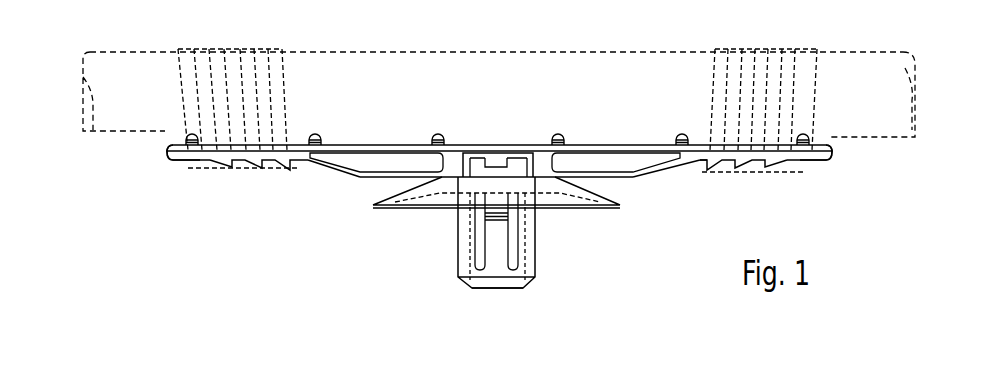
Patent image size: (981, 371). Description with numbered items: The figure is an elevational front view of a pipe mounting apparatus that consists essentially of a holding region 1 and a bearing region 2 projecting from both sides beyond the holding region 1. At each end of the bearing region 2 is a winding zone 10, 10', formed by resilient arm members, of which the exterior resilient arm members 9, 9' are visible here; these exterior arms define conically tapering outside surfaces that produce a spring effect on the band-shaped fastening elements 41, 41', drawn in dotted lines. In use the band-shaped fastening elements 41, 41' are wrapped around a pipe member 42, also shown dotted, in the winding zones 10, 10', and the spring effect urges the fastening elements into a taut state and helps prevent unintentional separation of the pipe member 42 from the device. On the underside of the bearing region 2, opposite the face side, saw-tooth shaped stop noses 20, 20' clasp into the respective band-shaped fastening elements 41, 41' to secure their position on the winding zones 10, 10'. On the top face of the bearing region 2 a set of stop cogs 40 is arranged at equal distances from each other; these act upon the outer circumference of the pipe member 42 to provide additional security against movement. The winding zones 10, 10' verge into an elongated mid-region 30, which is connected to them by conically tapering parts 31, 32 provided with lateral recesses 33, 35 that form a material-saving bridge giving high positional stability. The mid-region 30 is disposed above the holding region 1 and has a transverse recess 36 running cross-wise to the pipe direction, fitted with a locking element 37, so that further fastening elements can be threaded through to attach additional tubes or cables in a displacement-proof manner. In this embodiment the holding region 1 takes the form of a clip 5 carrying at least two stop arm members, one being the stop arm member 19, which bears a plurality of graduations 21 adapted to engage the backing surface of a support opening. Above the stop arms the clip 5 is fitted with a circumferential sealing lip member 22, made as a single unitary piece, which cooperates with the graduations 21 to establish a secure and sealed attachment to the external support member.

The holding region 1 is at (446, 279).
The bearing region 2 is at (589, 140).
The clip 5 is at (536, 272).
The resilient arm member 9 is at (183, 175).
The resilient arm member 9' is at (821, 179).
The winding zone 10 is at (135, 117).
The winding zone 10' is at (870, 126).
The stop arm member 19 is at (495, 268).
The stop nose 20 is at (244, 200).
The stop nose 20' is at (752, 192).
The graduations 21 is at (486, 218).
The circumferential sealing lip member 22 is at (600, 209).
The mid-region 30 is at (495, 152).
The conically tapering part 31 is at (331, 176).
The conically tapering part 32 is at (661, 177).
The lateral recess 33 is at (393, 152).
The lateral recess 35 is at (637, 156).
The transverse recess 36 is at (517, 157).
The locking element 37 is at (488, 155).
The stop cogs 40 is at (184, 134).
The band-shaped fastening element 41 is at (238, 79).
The band-shaped fastening element 41' is at (763, 79).
The pipe member 42 is at (374, 52).